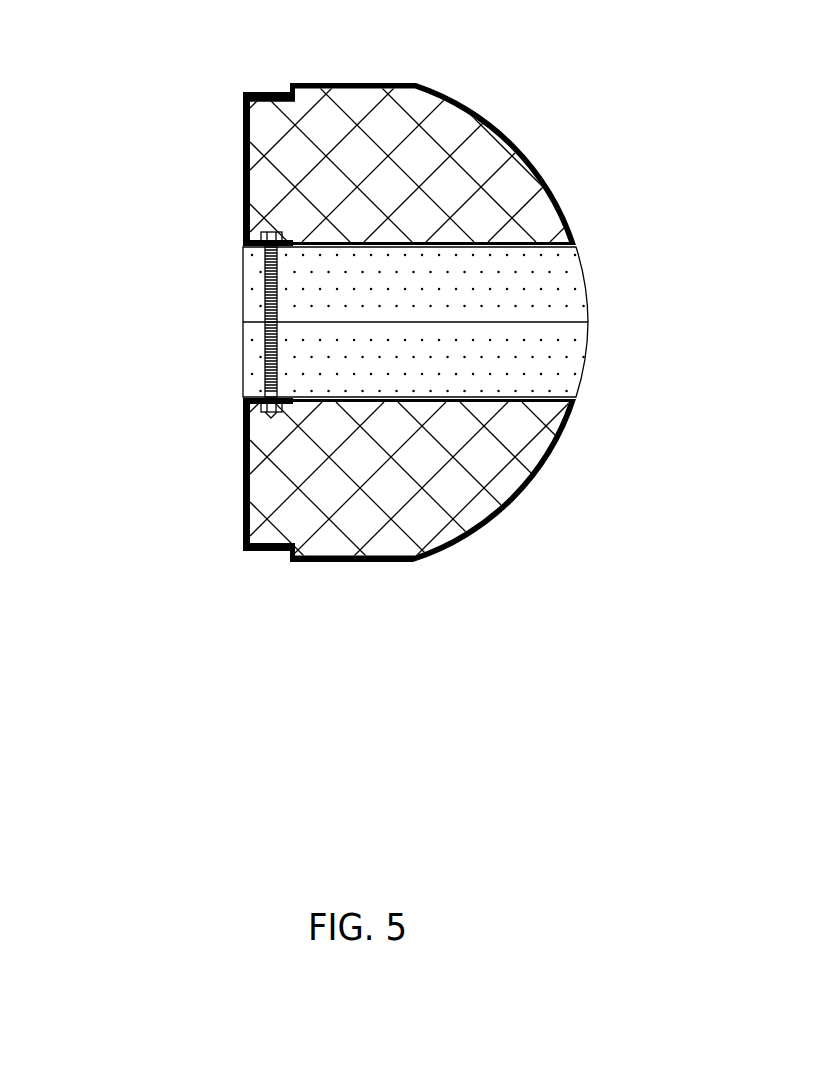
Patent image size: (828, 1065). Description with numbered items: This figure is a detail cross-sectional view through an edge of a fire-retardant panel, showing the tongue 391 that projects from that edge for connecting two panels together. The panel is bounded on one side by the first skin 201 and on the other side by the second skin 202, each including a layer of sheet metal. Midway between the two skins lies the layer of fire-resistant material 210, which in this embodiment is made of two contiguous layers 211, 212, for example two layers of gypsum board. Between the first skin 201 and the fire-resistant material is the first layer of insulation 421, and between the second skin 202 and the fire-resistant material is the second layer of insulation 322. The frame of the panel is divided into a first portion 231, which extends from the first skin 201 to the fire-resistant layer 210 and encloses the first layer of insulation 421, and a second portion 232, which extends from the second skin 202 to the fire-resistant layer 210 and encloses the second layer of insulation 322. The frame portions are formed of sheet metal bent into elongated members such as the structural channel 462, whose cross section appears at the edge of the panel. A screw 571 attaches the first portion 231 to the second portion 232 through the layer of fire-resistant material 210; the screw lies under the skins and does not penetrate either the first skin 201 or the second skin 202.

The second skin 202 is at (352, 82).
The first skin 201 is at (352, 565).
The second layer of insulation 322 is at (495, 173).
The first layer of insulation 421 is at (517, 465).
The second portion of the frame 232 is at (248, 179).
The first portion of the frame 231 is at (248, 471).
The tongue 391 is at (260, 79).
The structural channel 462 is at (247, 518).
The layer of gypsum board 212 is at (568, 282).
The layer of fire-resistant material 210 is at (558, 323).
The layer of gypsum board 211 is at (560, 367).
The screw 571 is at (262, 322).